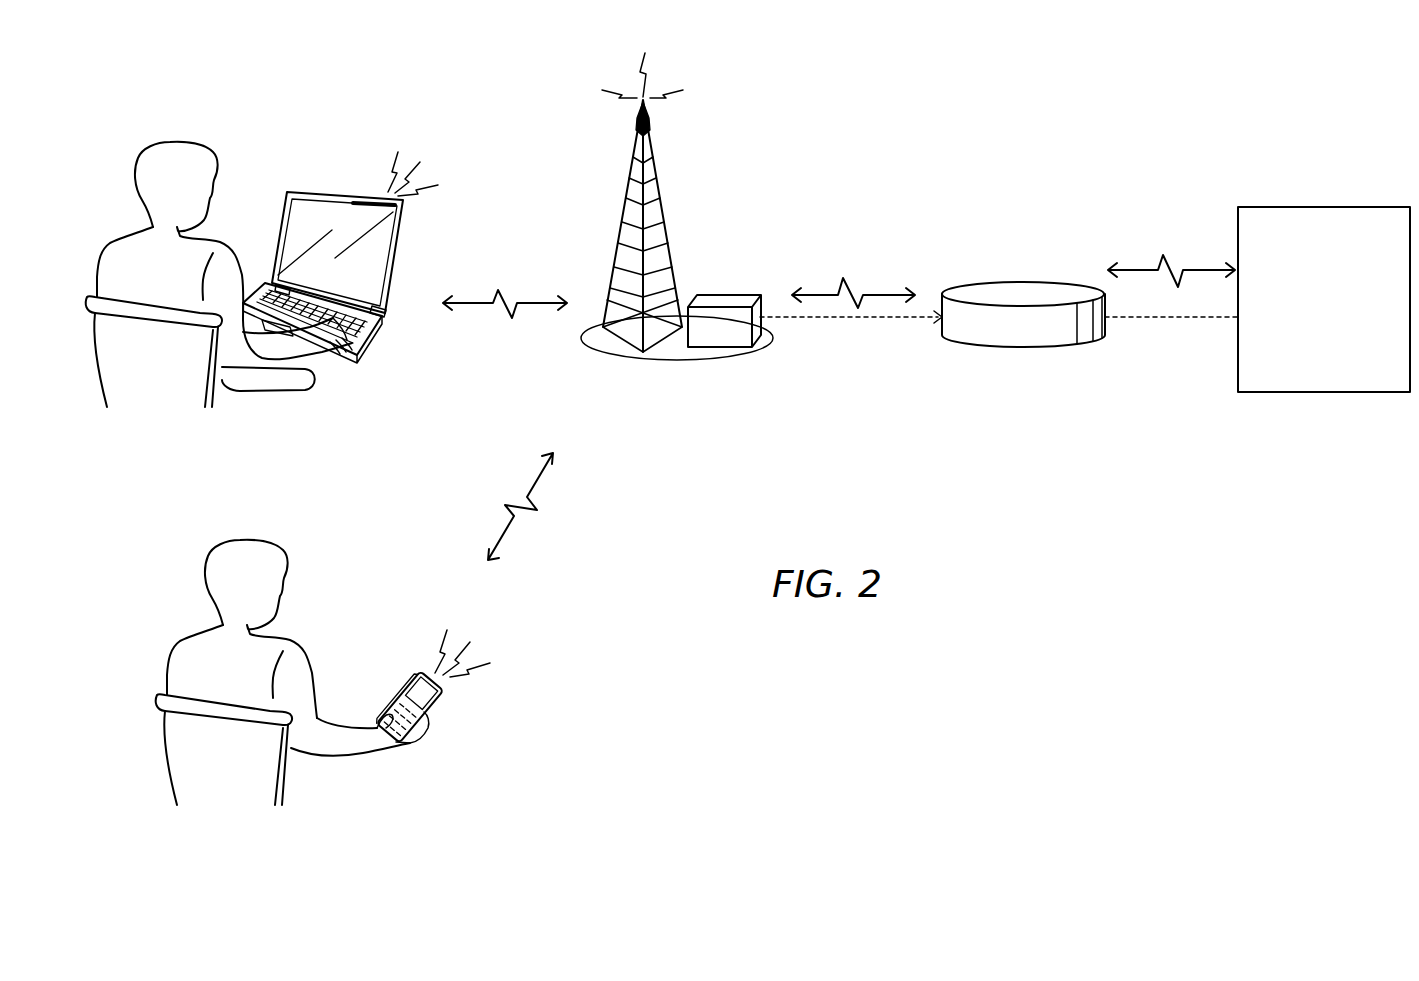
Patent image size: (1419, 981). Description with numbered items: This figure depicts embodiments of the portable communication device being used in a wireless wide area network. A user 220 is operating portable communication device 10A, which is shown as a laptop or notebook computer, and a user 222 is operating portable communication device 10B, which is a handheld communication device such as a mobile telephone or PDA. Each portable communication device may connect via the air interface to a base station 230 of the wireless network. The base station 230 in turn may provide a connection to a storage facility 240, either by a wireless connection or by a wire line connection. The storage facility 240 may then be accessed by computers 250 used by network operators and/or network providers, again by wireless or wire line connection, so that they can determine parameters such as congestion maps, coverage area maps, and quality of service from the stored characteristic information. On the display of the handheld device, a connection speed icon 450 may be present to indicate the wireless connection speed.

The user 220 is at (173, 142).
The portable communication device 10A is at (342, 192).
The base station 230 is at (630, 173).
The storage facility 240 is at (1022, 290).
The computers 250 is at (1343, 347).
The user 222 is at (243, 540).
The portable communication device 10B is at (397, 710).
The connection speed icon 450 is at (433, 710).